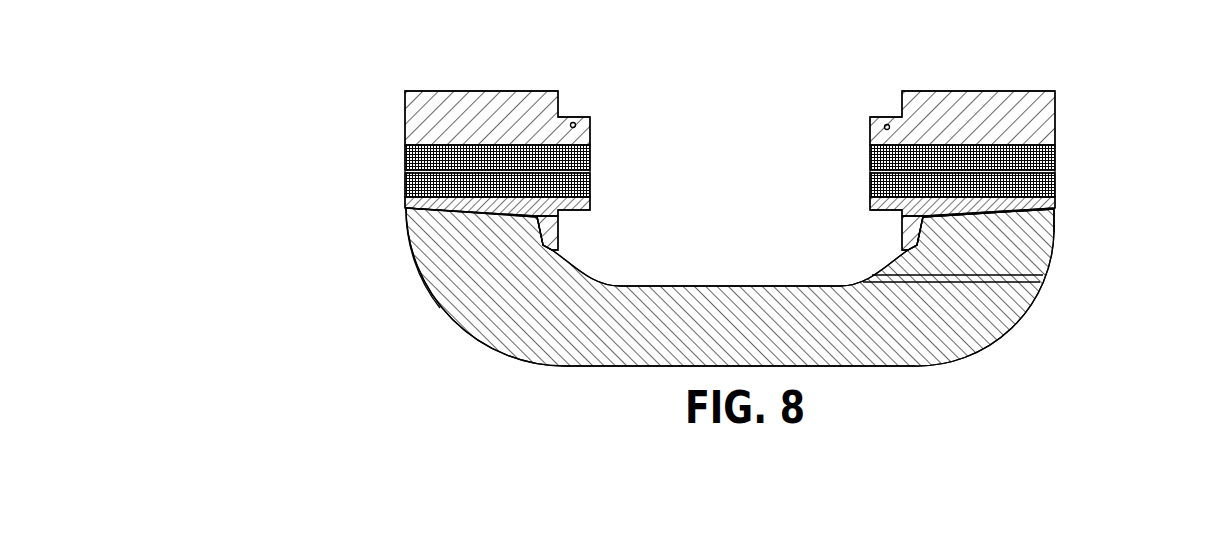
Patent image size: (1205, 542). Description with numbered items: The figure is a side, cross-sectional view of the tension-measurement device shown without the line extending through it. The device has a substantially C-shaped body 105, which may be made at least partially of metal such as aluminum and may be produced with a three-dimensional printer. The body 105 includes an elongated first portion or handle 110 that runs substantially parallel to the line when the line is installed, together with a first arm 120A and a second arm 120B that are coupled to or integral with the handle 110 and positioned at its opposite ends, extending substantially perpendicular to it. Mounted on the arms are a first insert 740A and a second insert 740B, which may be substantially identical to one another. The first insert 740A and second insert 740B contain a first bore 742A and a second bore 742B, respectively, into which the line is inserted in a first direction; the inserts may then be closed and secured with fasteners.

The body 105 is at (706, 310).
The first portion 110 is at (572, 366).
The first arm 120A is at (406, 228).
The second arm 120B is at (1052, 240).
The first insert 740A is at (448, 92).
The second insert 740B is at (1002, 92).
The first bore 742A is at (456, 137).
The second bore 742B is at (1008, 138).